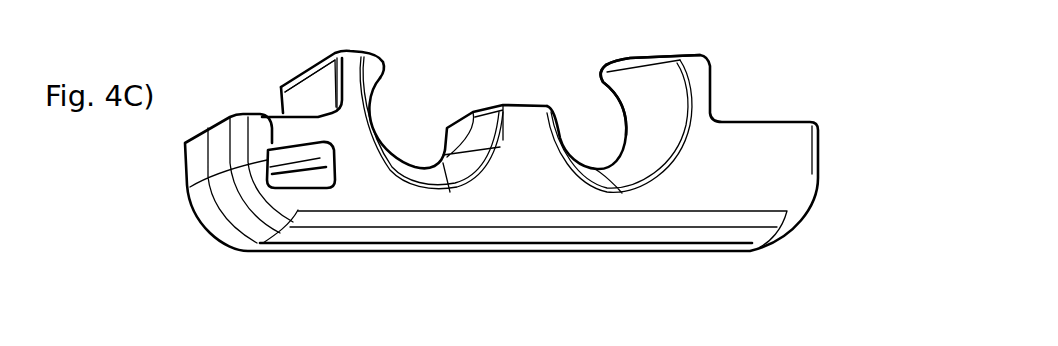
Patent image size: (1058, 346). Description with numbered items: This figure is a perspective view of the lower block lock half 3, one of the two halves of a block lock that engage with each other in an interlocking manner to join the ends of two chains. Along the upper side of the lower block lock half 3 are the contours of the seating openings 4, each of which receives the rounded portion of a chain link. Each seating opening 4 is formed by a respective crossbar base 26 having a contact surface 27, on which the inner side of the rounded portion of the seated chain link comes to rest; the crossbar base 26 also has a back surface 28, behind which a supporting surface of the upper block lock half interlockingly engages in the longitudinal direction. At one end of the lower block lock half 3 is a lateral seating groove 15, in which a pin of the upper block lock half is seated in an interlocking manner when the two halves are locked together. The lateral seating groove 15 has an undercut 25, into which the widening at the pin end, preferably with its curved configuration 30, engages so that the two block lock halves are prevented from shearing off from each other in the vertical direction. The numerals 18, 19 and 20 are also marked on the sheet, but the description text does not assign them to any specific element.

The lower block lock half 3 is at (760, 246).
The seating opening 4 is at (597, 150).
The lateral seating groove 15 is at (300, 150).
The holding section 18 is at (199, 7).
The holding section 19 is at (649, 7).
The holding section 20 is at (527, 5).
The undercut 25 is at (296, 172).
The crossbar base 26 is at (345, 50).
The contact surface 27 is at (630, 95).
The back surface 28 is at (318, 102).
The curved configuration 30 is at (142, 5).